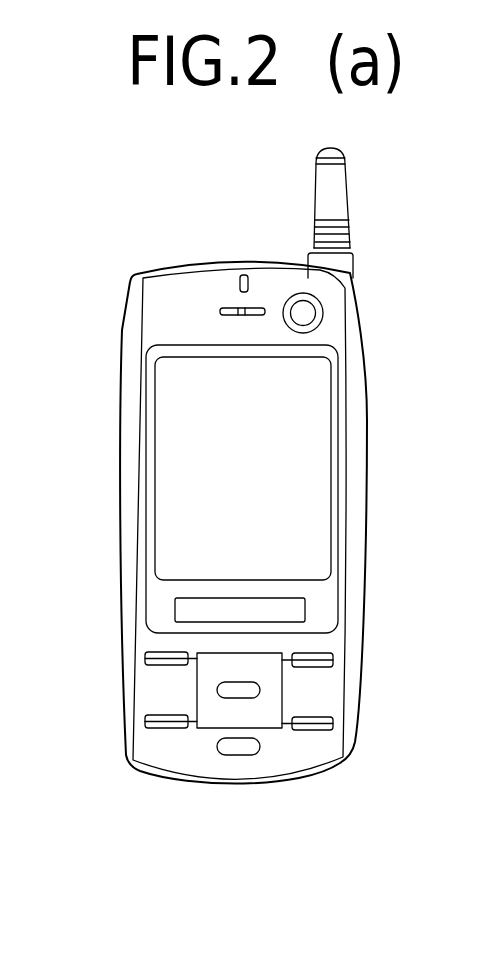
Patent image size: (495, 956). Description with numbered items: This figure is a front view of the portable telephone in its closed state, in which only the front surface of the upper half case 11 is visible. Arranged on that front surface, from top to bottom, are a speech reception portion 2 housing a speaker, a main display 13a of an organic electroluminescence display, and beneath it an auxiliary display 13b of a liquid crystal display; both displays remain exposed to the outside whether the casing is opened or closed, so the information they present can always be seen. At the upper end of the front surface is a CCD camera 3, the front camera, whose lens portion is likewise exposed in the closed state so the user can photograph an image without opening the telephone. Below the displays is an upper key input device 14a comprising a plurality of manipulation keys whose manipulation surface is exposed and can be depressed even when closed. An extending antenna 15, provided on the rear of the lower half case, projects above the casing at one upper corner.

The upper half case 11 is at (358, 478).
The extending antenna 15 is at (330, 207).
The speech reception portion 2 is at (259, 306).
The CCD camera 3 is at (322, 315).
The main display 13a is at (312, 560).
The auxiliary display 13b is at (293, 613).
The upper key input device 14a is at (277, 695).